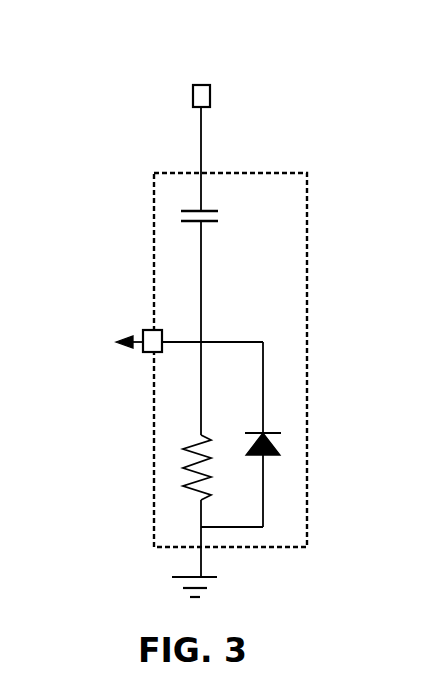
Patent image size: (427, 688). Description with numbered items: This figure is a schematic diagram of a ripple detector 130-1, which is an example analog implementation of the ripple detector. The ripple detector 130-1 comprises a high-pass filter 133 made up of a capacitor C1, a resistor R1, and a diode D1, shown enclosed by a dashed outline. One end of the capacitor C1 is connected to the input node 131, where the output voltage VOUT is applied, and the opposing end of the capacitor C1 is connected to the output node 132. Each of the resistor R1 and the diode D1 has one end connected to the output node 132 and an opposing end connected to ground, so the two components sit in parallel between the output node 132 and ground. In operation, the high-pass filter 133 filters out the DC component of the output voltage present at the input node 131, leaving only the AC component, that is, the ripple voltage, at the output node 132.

The ripple detector 130-1 is at (84, 77).
The input node 131 is at (210, 93).
The output node 132 is at (150, 353).
The high-pass filter 133 is at (306, 219).
The capacitor C1 is at (204, 204).
The resistor R1 is at (187, 458).
The diode D1 is at (267, 434).